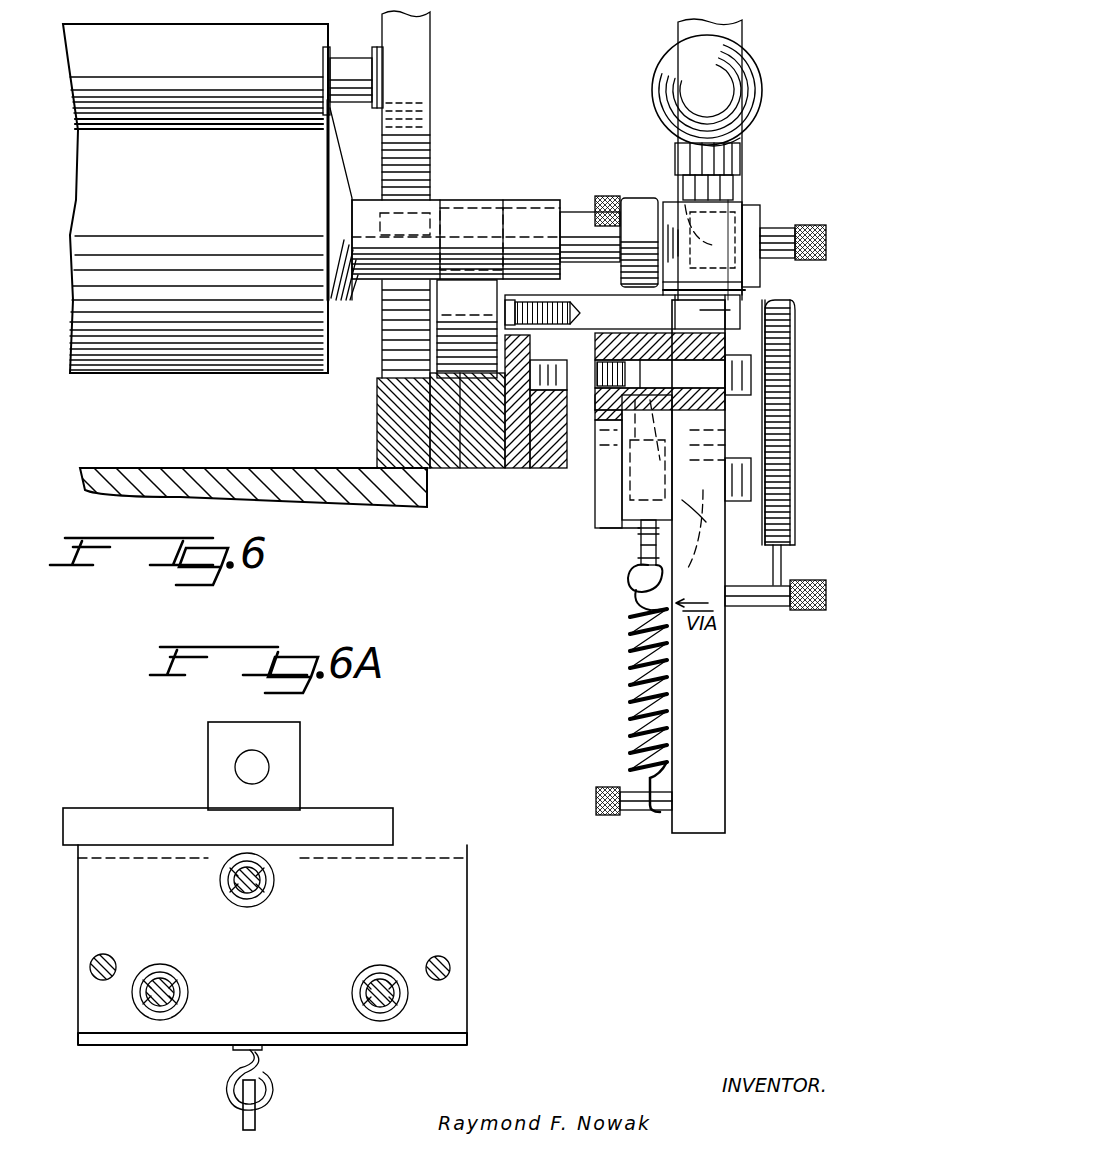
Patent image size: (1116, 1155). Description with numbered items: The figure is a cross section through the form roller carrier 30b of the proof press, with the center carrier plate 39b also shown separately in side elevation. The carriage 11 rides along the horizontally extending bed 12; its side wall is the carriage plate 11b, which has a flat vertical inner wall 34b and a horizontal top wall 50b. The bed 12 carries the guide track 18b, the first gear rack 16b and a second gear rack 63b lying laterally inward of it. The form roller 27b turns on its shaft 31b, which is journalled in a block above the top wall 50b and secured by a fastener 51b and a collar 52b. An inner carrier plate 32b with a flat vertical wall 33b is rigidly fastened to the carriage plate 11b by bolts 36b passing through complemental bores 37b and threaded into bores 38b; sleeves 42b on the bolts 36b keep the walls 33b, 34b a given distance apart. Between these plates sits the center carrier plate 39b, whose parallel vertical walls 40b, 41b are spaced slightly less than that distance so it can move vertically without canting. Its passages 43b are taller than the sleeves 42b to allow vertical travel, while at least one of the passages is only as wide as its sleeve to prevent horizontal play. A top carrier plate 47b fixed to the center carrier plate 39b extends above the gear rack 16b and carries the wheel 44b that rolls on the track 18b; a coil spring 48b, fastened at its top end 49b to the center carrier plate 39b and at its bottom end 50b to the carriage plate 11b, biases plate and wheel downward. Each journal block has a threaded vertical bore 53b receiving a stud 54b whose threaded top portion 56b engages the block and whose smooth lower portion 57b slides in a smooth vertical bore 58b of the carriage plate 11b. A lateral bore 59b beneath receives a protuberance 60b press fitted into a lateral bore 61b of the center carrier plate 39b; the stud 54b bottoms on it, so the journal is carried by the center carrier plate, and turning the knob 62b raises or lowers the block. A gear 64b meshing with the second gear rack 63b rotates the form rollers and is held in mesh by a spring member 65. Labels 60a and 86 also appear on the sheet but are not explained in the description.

In FIG. 6, the carriage 11 is at (745, 40).
In FIG. 6, the carriage plate 11b is at (712, 686).
In FIG. 6, the bed 12 is at (298, 505).
In FIG. 6, the gear rack 16b is at (549, 362).
In FIG. 6, the guide track means 18b is at (465, 440).
In FIG. 6, the form roller 27b is at (245, 345).
In FIG. 6, the form roller carrier 30b is at (590, 482).
In FIG. 6A, the form roller carrier 30b is at (482, 1050).
In FIG. 6, the shaft 31b is at (570, 212).
In FIG. 6, the inner carrier plate 32b is at (596, 412).
In FIG. 6, the flat vertical wall 33b is at (605, 420).
In FIG. 6, the flat vertical inner wall 34b is at (672, 822).
In FIG. 6, the bolts 36b is at (750, 362).
In FIG. 6A, the bolts 36b is at (238, 894).
In FIG. 6, the complemental bores 37b is at (702, 537).
In FIG. 6, the threaded bores 38b is at (597, 372).
In FIG. 6, the center carrier plate 39b is at (628, 520).
In FIG. 6A, the center carrier plate 39b is at (450, 920).
In FIG. 6, the flat parallel vertical wall 40b is at (640, 540).
In FIG. 6, the flat parallel vertical wall 41b is at (640, 560).
In FIG. 6, the sleeves 42b is at (654, 430).
In FIG. 6A, the sleeves 42b is at (262, 896).
In FIG. 6, the bores or passages 43b is at (681, 357).
In FIG. 6A, the bores or passages 43b is at (274, 878).
In FIG. 6, the wheel 44b is at (438, 342).
In FIG. 6, the top carrier plate 47b is at (543, 290).
In FIG. 6A, the top carrier plate 47b is at (133, 816).
In FIG. 6, the coil spring 48b is at (628, 668).
In FIG. 6, the top end of biasing member 49b is at (728, 200).
In FIG. 6A, the top end of biasing member 49b is at (268, 1114).
In FIG. 6, the bottom end of biasing member 50b is at (708, 310).
In FIG. 6, the fastener 51b is at (750, 215).
In FIG. 6, the collar 52b is at (632, 200).
In FIG. 6, the threaded vertical bore 53b is at (768, 225).
In FIG. 6, the stud 54b is at (823, 422).
In FIG. 6, the top portion of stud 56b is at (678, 230).
In FIG. 6, the lower portion of stud 57b is at (778, 372).
In FIG. 6, the smooth vertical bore 58b is at (758, 410).
In FIG. 6, the laterally extending bore 59b is at (708, 522).
In FIG. 6A, the hole 60a is at (452, 968).
In FIG. 6, the protuberances 60b is at (716, 460).
In FIG. 6, the lateral bore 61b is at (566, 540).
In FIG. 6, the knob 62b is at (760, 92).
In FIG. 6, the second gear rack 63b is at (378, 412).
In FIG. 6, the gear 64b is at (420, 150).
In FIG. 6, the spring member 65 is at (790, 490).
In FIG. 6, the pin 86 is at (725, 318).